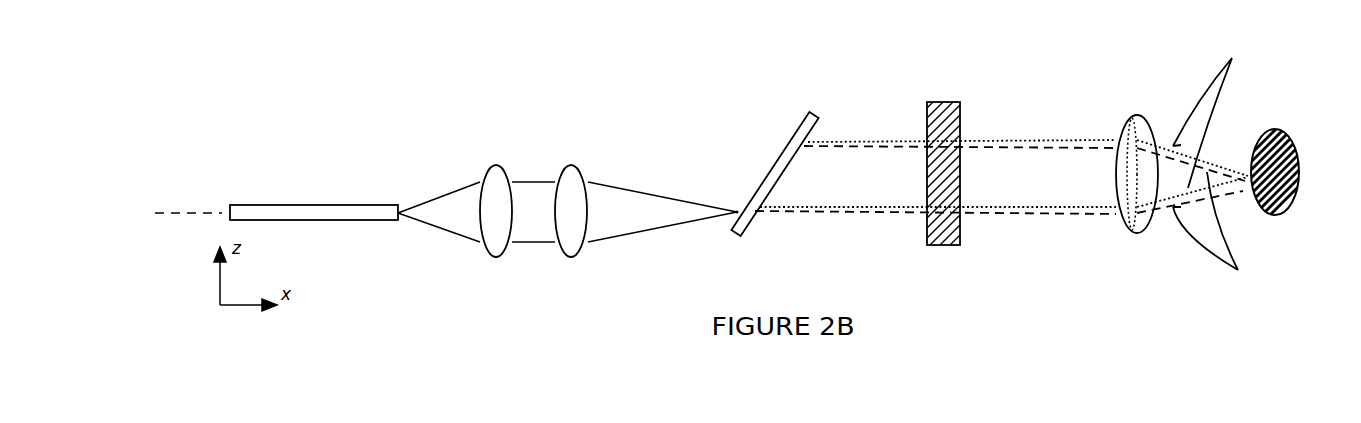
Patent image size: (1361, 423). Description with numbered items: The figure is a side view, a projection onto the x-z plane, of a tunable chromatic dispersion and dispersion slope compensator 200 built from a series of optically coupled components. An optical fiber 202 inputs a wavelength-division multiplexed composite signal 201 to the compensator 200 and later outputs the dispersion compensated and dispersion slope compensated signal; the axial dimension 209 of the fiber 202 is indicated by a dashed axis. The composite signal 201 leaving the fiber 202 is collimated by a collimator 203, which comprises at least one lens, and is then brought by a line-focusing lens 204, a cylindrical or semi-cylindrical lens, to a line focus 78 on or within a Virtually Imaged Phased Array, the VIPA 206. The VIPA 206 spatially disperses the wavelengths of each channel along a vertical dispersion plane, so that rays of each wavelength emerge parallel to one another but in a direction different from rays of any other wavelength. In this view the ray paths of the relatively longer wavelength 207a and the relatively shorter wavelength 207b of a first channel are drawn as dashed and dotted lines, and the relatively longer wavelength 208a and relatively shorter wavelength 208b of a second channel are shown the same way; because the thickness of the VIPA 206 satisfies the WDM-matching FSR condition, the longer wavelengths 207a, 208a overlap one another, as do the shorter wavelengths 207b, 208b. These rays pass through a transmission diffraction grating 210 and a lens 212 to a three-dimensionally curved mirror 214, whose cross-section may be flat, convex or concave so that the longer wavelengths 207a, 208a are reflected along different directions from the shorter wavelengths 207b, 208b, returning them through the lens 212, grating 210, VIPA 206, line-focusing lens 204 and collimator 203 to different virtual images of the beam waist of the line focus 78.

The compensator 200 is at (323, 40).
The composite signal 201 is at (452, 189).
The optical fiber 202 is at (297, 205).
The collimator 203 is at (497, 165).
The line-focusing lens 204 is at (572, 165).
The line focus 78 is at (737, 208).
The Virtually Imaged Phased Array (VIPA) 206 is at (805, 117).
The axial dimension 209 is at (212, 212).
The transmission diffraction grating 210 is at (942, 102).
The lens 212 is at (1138, 117).
The relatively longer wavelength of first channel 207a is at (1238, 240).
The relatively shorter wavelength of first channel 207b is at (1247, 108).
The relatively longer wavelength of second channel 208a is at (1205, 221).
The relatively shorter wavelength of second channel 208b is at (1202, 123).
The three-dimensionally curved mirror 214 is at (1290, 137).